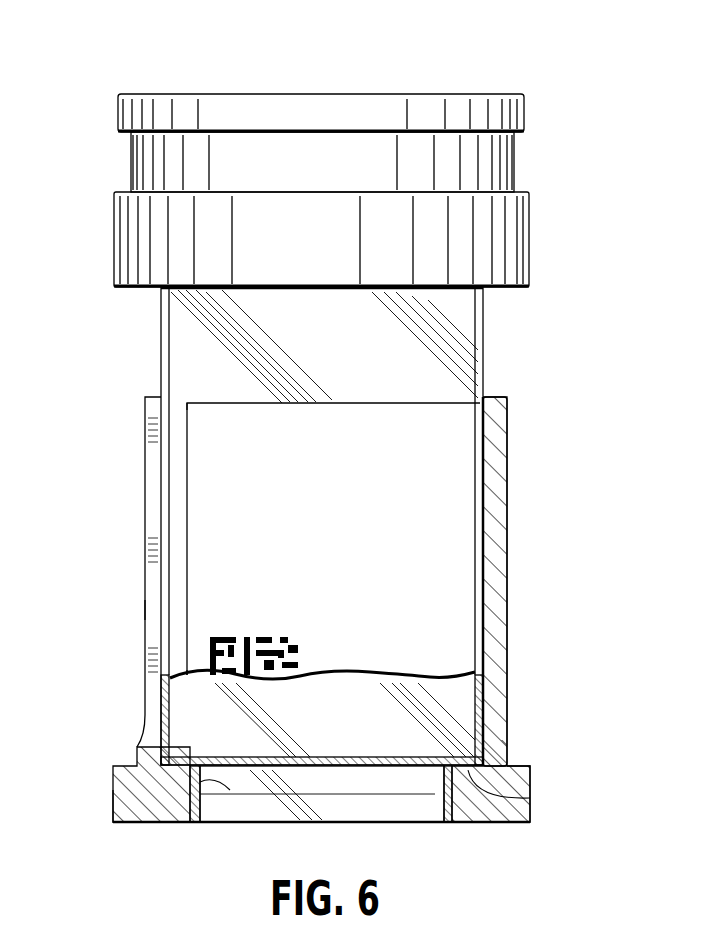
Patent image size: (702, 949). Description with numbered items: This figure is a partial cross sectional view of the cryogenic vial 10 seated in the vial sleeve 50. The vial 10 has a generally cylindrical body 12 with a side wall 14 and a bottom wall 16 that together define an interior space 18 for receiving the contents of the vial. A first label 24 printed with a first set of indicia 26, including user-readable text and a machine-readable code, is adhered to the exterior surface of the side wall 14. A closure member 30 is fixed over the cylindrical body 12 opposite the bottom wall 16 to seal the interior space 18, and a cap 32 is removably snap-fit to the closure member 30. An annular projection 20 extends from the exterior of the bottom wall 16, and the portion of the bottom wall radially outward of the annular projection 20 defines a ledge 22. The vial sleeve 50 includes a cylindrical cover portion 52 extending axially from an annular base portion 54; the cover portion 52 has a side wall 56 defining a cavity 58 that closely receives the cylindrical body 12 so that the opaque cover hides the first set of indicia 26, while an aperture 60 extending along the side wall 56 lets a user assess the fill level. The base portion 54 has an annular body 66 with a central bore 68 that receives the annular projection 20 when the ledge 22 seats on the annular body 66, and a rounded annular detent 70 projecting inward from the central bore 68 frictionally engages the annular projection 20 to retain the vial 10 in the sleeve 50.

The cryogenic vial 10 is at (84, 48).
The cylindrical body 12 is at (150, 352).
The side wall 14 is at (480, 720).
The bottom wall 16 is at (325, 767).
The interior space 18 is at (356, 715).
The annular projection 20 is at (196, 822).
The ledge 22 is at (530, 807).
The first label 24 is at (195, 565).
The first set of indicia 26 is at (220, 444).
The closure member 30 is at (531, 242).
The cap 32 is at (528, 117).
The vial sleeve 50 is at (80, 434).
The cover portion 52 is at (131, 500).
The base portion 54 is at (101, 781).
The side wall 56 is at (497, 466).
The cavity 58 is at (482, 635).
The aperture 60 is at (152, 608).
The annular body 66 is at (120, 806).
The central bore 68 is at (440, 822).
The annular detent 70 is at (200, 782).